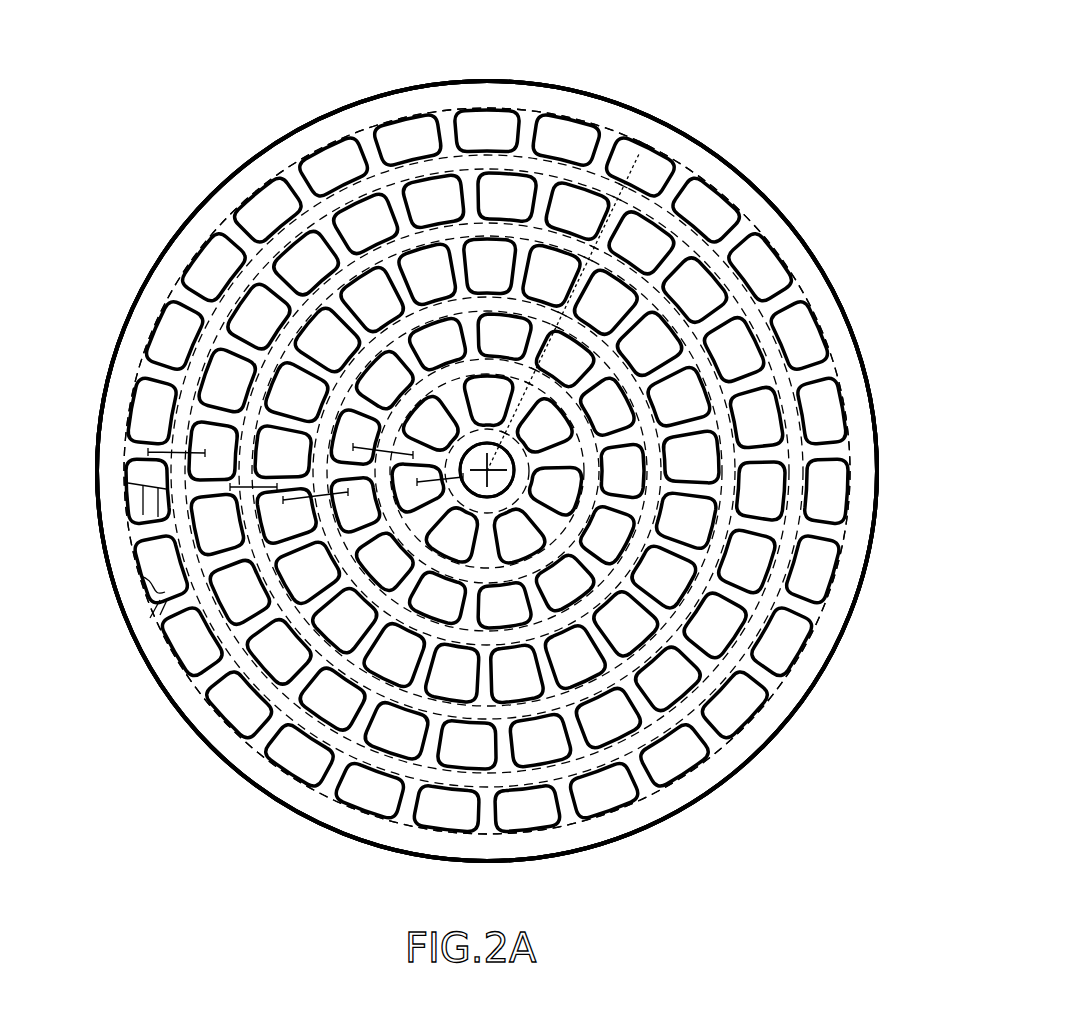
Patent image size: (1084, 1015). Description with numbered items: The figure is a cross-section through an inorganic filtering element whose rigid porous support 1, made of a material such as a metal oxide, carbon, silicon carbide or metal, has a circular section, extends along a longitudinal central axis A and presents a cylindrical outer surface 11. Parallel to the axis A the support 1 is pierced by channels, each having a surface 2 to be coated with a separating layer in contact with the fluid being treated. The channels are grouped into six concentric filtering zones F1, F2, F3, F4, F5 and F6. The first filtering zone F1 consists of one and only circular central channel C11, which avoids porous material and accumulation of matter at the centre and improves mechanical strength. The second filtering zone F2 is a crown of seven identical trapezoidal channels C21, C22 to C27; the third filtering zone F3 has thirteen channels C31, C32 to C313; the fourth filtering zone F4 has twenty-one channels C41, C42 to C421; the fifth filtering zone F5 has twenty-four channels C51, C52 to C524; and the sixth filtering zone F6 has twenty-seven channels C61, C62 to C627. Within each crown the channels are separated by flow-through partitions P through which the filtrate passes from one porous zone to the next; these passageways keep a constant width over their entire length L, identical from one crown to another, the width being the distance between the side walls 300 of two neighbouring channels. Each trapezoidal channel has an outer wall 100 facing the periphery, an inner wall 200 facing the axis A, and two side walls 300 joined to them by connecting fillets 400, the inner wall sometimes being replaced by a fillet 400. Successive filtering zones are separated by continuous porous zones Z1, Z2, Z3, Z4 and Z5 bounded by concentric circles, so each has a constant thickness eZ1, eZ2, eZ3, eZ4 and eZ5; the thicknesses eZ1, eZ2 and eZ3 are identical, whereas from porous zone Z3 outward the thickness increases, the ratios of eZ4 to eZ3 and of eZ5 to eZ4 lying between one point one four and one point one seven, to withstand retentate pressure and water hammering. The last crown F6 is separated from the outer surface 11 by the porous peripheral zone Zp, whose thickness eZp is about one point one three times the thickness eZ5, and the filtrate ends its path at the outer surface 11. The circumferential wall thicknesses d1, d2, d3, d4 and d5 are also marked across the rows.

The rigid porous support 1 is at (492, 86).
The cylindrical outer surface 11 is at (441, 88).
The channel surface 2 is at (383, 822).
The flow-through partition P is at (728, 742).
The longitudinal central axis A is at (487, 474).
The peripheral zone Zp is at (323, 133).
The first porous zone Z1 is at (425, 385).
The second porous zone Z2 is at (402, 402).
The third porous zone Z3 is at (325, 420).
The fourth porous zone Z4 is at (255, 390).
The fifth porous zone Z5 is at (125, 396).
The central channel C11 is at (487, 470).
The channel of second filtering zone C21 is at (555, 488).
The channel of second filtering zone C22 is at (516, 535).
The channel of second filtering zone C27 is at (543, 428).
The channel of third filtering zone C31 is at (622, 470).
The channel of third filtering zone C32 is at (607, 534).
The channel of third filtering zone C313 is at (607, 408).
The channel of fourth filtering zone C41 is at (691, 458).
The channel of fourth filtering zone C42 is at (686, 518).
The channel of fourth filtering zone C421 is at (678, 399).
The channel of fifth filtering zone C51 is at (756, 419).
The channel of fifth filtering zone C52 is at (761, 490).
The channel of fifth filtering zone C524 is at (738, 348).
The channel of sixth filtering zone C61 is at (824, 409).
The channel of sixth filtering zone C62 is at (826, 491).
The channel of sixth filtering zone C627 is at (818, 333).
The first filtering zone F1 is at (477, 481).
The second filtering zone F2 is at (455, 540).
The third filtering zone F3 is at (442, 608).
The fourth filtering zone F4 is at (455, 675).
The fifth filtering zone F5 is at (538, 742).
The sixth filtering zone F6 is at (601, 790).
The straight line segment length of passageway L is at (128, 481).
The outer wall 100 is at (140, 576).
The inner wall 200 is at (160, 600).
The side wall 300 is at (167, 600).
The connecting fillet 400 is at (135, 551).
The thickness of first porous zone eZ1 is at (512, 412).
The thickness of second porous zone eZ2 is at (540, 350).
The thickness of third porous zone eZ3 is at (572, 290).
The thickness of fourth porous zone eZ4 is at (605, 225).
The thickness of fifth porous zone eZ5 is at (633, 164).
The thickness of peripheral zone eZp is at (608, 143).
The circumferential wall thickness d1 is at (440, 468).
The circumferential wall thickness d2 is at (383, 440).
The circumferential wall thickness d3 is at (315, 487).
The circumferential wall thickness d4 is at (253, 476).
The circumferential wall thickness d5 is at (176, 458).